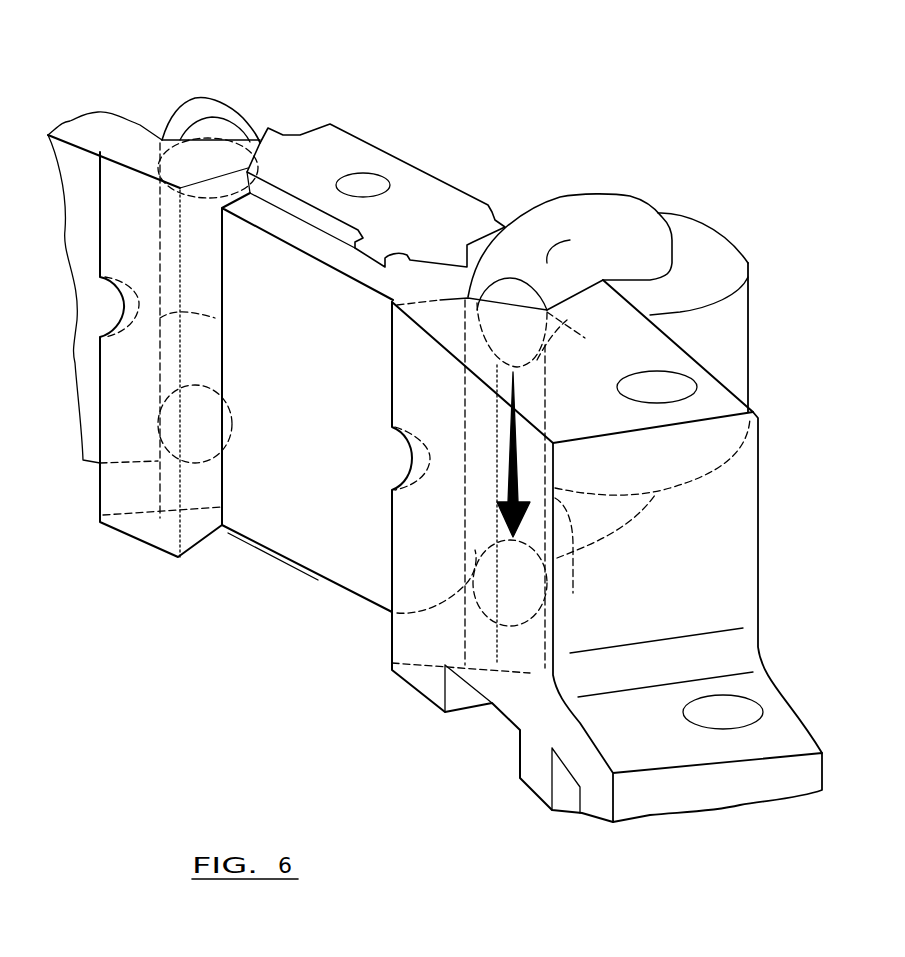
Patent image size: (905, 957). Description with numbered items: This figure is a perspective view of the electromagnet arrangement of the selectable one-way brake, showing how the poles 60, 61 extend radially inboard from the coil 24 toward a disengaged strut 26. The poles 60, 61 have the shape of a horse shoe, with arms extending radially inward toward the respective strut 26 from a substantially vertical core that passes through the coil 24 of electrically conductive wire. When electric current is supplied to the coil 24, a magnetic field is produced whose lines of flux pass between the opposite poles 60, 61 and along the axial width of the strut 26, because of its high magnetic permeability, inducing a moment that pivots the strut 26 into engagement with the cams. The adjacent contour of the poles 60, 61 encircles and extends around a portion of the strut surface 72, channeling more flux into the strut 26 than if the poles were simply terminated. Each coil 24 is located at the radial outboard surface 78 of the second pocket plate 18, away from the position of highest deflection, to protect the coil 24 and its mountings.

The second pocket plate 18 is at (740, 562).
The coil 24 is at (720, 250).
The strut 26 is at (100, 302).
The pole 60 is at (227, 113).
The pole 61 is at (197, 443).
The strut surface 72 is at (392, 647).
The radial outboard surface 78 is at (408, 162).